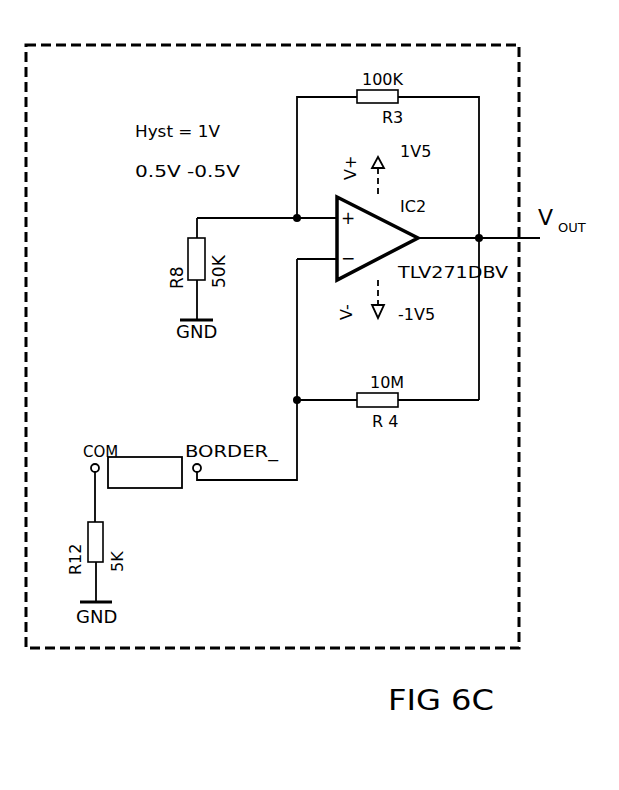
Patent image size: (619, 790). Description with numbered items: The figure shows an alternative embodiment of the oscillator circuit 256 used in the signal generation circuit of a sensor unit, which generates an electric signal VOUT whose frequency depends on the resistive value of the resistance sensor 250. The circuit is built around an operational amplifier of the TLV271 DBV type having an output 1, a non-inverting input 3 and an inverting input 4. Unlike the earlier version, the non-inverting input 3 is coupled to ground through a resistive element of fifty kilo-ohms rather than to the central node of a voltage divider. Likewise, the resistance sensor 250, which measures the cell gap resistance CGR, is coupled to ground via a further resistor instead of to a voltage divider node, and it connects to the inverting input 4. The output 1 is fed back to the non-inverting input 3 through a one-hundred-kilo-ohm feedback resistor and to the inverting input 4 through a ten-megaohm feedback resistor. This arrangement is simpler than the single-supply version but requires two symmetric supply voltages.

The oscillator circuit 256 is at (95, 45).
The resistance sensor 250 is at (152, 455).
The non-inverting input 3 is at (267, 209).
The inverting input 4 is at (317, 249).
The output 1 is at (479, 227).